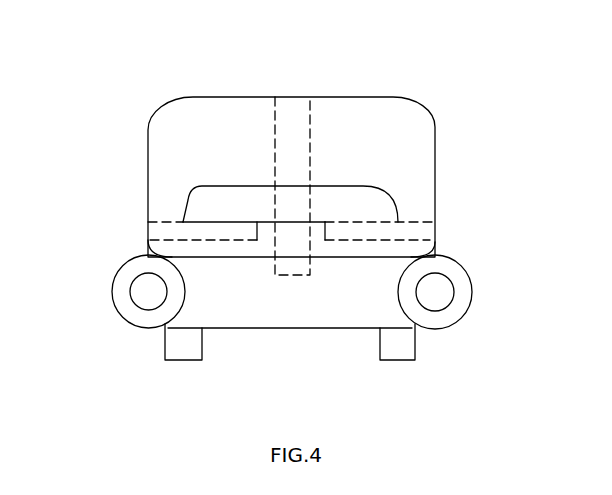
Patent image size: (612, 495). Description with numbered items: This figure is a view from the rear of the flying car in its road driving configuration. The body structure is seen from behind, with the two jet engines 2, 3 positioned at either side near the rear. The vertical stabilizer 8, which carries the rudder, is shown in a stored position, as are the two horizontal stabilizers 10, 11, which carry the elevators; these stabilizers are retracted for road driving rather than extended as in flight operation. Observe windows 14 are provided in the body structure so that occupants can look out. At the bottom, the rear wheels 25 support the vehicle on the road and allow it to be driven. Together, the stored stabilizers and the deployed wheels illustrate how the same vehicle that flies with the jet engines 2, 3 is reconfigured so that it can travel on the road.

The jet engine 2 is at (112, 308).
The jet engine 3 is at (470, 312).
The vertical stabilizer 8 is at (292, 115).
The horizontal stabilizer 10 is at (167, 239).
The horizontal stabilizer 11 is at (417, 242).
The observe windows 14 is at (363, 205).
The rear wheels 25 is at (380, 360).